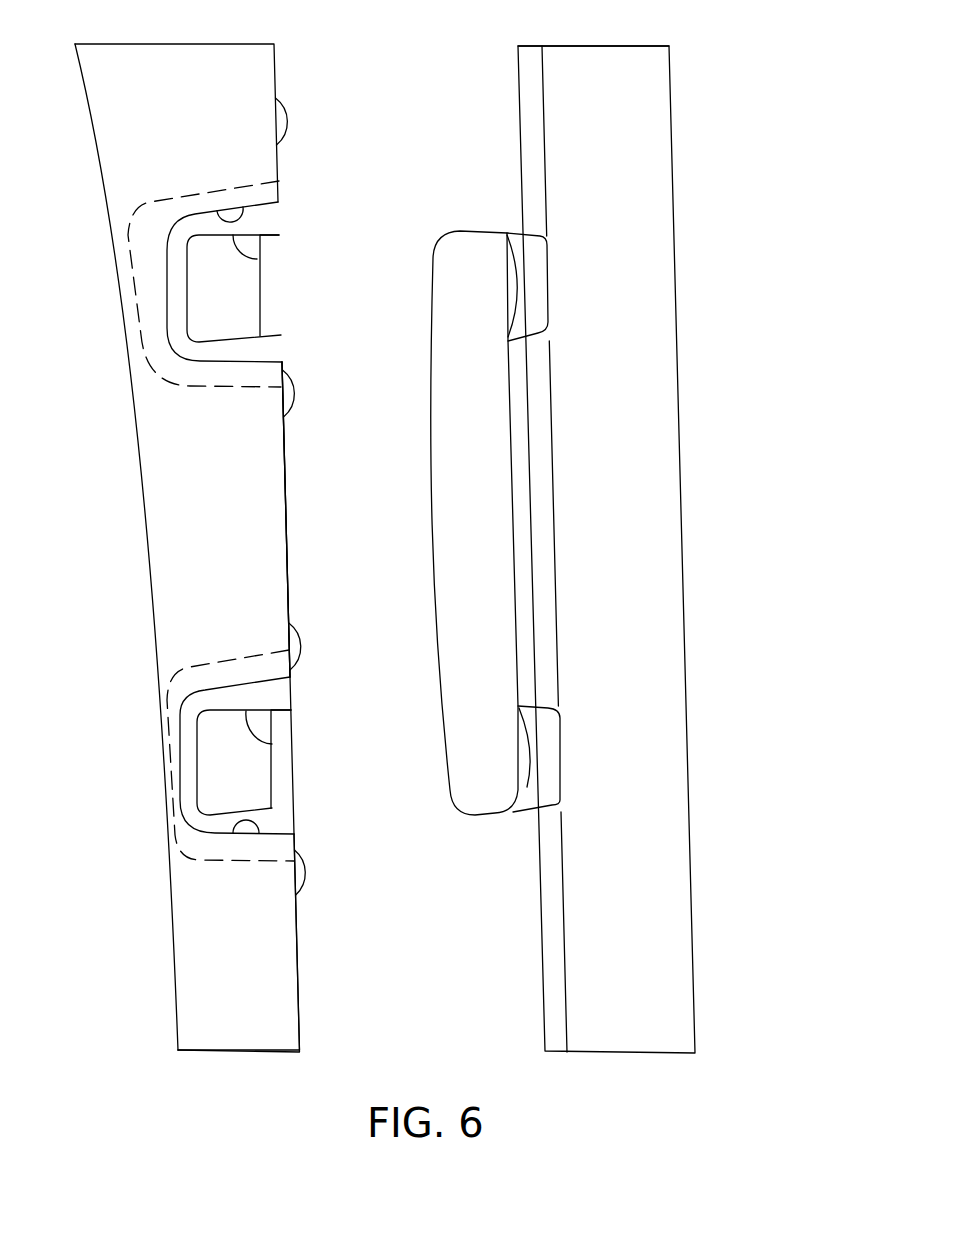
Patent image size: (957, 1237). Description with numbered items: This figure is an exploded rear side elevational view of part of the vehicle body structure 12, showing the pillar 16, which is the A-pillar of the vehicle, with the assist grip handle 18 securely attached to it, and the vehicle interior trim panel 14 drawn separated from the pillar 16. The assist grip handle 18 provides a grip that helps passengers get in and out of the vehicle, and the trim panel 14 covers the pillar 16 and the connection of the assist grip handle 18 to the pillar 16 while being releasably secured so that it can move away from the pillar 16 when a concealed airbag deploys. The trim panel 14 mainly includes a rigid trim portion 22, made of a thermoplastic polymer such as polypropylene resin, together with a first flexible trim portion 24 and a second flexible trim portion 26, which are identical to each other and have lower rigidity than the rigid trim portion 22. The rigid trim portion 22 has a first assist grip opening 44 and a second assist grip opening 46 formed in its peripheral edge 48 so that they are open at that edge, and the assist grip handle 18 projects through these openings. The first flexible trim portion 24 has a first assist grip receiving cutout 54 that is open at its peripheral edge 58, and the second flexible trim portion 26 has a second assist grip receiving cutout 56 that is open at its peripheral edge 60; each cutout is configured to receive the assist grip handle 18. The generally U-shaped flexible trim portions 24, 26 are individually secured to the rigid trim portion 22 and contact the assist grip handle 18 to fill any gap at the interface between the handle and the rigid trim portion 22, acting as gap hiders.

The vehicle body structure 12 is at (728, 143).
The vehicle interior trim panel 14 is at (141, 497).
The pillar 16 is at (630, 46).
The assist grip handle 18 is at (427, 435).
The rigid trim portion 22 is at (130, 165).
The first flexible trim portion 24 is at (260, 348).
The second flexible trim portion 26 is at (270, 825).
The first assist grip opening 44 is at (241, 214).
The second assist grip opening 46 is at (259, 833).
The peripheral edge 48 is at (287, 518).
The first assist grip receiving cutout 54 is at (258, 258).
The second assist grip receiving cutout 56 is at (272, 747).
The peripheral edge 58 is at (279, 220).
The peripheral edge 60 is at (290, 690).